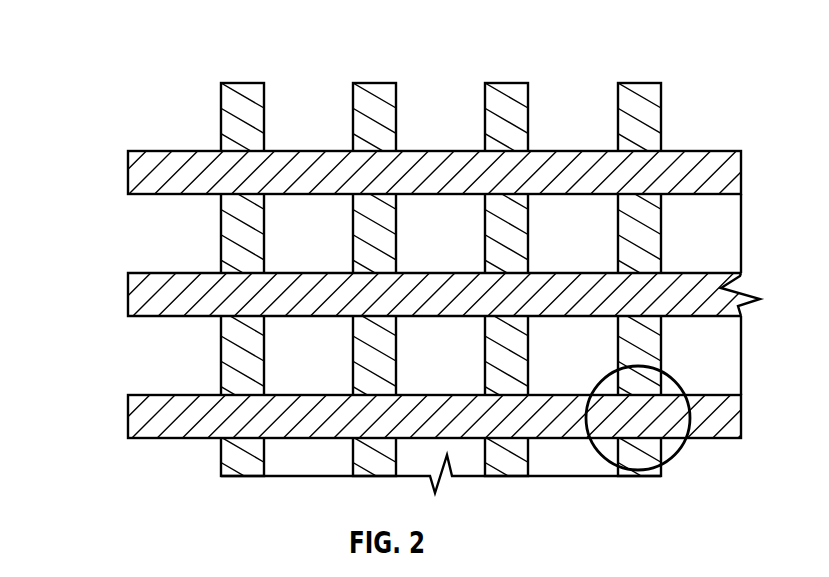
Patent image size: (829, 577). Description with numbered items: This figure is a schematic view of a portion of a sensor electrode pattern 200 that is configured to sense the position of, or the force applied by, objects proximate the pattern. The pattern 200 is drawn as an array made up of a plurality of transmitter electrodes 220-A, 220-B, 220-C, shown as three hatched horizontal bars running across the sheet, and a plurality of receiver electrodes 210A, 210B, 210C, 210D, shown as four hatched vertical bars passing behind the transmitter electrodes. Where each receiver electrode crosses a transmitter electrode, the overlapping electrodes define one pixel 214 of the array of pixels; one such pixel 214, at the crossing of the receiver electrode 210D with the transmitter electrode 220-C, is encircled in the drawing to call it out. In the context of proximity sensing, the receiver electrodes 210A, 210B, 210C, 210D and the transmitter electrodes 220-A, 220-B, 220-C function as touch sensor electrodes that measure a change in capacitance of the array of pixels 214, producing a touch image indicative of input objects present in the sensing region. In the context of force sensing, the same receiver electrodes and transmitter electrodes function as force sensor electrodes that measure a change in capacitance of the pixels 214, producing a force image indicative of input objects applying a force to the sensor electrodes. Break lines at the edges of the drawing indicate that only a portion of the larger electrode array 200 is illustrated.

The pattern 200 is at (116, 39).
The receiver electrode 210A is at (241, 83).
The receiver electrode 210B is at (373, 83).
The receiver electrode 210C is at (505, 83).
The receiver electrode 210D is at (638, 83).
The transmitter electrode 220-A is at (128, 172).
The transmitter electrode 220-B is at (128, 294).
The transmitter electrode 220-C is at (128, 416).
The pixel 214 is at (663, 367).